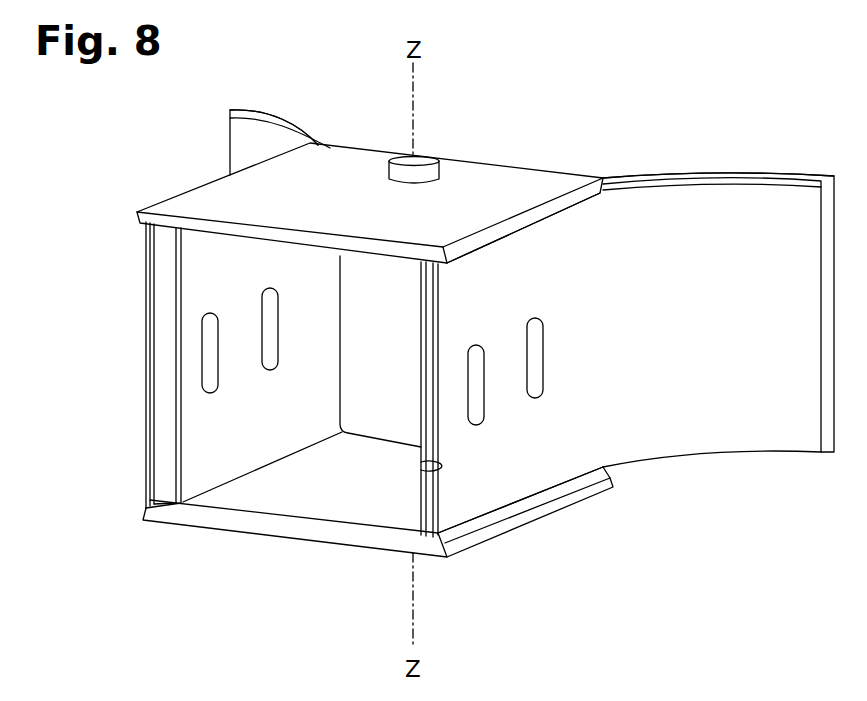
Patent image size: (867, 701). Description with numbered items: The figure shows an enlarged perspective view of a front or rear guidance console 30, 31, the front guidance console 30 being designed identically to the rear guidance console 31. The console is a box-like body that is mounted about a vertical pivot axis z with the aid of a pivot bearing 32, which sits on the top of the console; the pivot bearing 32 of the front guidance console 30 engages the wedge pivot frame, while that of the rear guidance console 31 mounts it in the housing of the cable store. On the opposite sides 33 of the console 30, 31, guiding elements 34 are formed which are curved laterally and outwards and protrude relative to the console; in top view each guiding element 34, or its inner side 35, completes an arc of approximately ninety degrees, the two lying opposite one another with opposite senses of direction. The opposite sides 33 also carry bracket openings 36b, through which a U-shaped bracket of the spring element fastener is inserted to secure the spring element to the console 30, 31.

The front guidance console 30 is at (511, 152).
The rear guidance console 31 is at (375, 300).
The pivot bearing 32 is at (427, 160).
The opposite sides 33 is at (138, 418).
The guiding element 34 is at (240, 147).
The inner side 35 is at (339, 131).
The bracket opening 36b is at (205, 360).